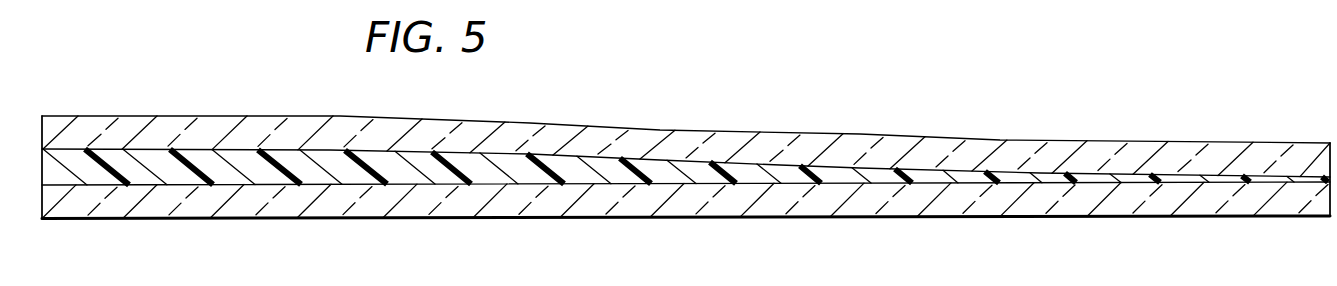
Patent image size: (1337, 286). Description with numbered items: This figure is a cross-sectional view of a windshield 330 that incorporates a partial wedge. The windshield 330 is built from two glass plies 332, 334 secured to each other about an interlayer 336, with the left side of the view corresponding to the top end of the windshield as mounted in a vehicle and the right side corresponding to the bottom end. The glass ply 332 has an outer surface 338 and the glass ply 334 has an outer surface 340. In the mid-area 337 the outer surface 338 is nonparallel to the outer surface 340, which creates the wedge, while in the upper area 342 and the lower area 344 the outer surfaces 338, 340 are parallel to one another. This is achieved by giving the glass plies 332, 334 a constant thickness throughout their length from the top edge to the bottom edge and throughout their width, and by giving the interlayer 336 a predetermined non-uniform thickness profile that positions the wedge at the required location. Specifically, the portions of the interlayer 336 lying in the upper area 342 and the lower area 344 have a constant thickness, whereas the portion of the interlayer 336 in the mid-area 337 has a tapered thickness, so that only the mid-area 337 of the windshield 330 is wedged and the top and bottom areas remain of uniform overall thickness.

The windshield 330 is at (828, 123).
The glass ply 332 is at (1273, 152).
The glass ply 334 is at (1290, 204).
The interlayer 336 is at (1218, 178).
The mid-area 337 is at (706, 102).
The outer surface 338 is at (643, 128).
The outer surface 340 is at (795, 217).
The upper area 342 is at (186, 98).
The lower area 344 is at (1114, 117).